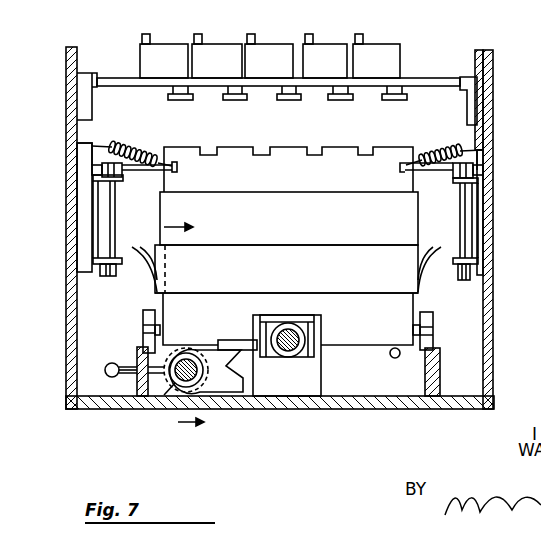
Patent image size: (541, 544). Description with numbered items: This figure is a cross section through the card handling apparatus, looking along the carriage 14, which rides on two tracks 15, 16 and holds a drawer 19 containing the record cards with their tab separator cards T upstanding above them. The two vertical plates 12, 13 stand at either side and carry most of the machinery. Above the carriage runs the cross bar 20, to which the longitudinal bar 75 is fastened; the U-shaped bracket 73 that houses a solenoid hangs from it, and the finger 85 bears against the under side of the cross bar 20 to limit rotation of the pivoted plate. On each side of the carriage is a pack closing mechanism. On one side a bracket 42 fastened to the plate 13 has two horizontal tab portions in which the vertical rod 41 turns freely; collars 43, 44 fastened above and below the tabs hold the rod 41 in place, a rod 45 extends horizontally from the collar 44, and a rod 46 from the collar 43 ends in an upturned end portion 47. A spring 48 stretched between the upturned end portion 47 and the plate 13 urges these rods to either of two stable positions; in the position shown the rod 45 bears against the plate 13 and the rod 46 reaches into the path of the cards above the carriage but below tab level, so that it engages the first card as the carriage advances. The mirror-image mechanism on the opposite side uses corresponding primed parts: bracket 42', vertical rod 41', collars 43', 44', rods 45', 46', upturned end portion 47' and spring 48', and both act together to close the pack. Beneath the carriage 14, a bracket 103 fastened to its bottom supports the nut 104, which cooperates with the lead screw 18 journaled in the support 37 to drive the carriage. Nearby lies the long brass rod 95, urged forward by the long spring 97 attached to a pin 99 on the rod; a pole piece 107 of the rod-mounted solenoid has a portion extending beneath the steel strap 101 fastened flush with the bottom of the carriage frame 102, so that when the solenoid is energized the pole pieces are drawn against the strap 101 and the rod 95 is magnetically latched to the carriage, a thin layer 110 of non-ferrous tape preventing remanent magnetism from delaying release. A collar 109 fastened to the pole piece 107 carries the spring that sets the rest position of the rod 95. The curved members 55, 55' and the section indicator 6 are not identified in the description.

The vertical plate 12 is at (66, 290).
The vertical plate 13 is at (494, 290).
The cross bar 20 is at (434, 78).
The U-shaped bracket 73 is at (268, 44).
The longitudinal bar 75 is at (245, 38).
The finger 85 is at (303, 100).
The tab separator cards T is at (208, 148).
The drawer 19 is at (327, 228).
The carriage 14 is at (327, 275).
The left curved guide 55' is at (138, 255).
The right curved guide 55 is at (437, 258).
The section line FIG. 6 is at (190, 327).
The bracket 42' is at (57, 207).
The collar 43' is at (57, 156).
The spring 48' is at (132, 144).
The upturned end portion 47' is at (176, 174).
The rod 46' is at (126, 181).
The vertical rod 41' is at (124, 216).
The collar 44' is at (120, 277).
The rod 45' is at (100, 286).
The bracket 42 is at (505, 212).
The collar 43 is at (505, 160).
The spring 48 is at (444, 146).
The upturned end portion 47 is at (406, 176).
The rod 46 is at (455, 184).
The vertical rod 41 is at (452, 218).
The collar 44 is at (454, 279).
The rod 45 is at (464, 290).
The carriage frame 102 is at (383, 315).
The bracket 103 is at (248, 314).
The support 37 is at (322, 387).
The lead screw 18 is at (315, 356).
The nut 104 is at (322, 330).
The steel strap 101 is at (236, 340).
The pole piece 107 is at (232, 373).
The thin layer of non-ferrous material 110 is at (207, 348).
The brass rod 95 is at (203, 385).
The collar 109 is at (168, 395).
The track 16 is at (441, 366).
The track 15 is at (134, 374).
The long spring 97 is at (110, 363).
The pin 99 is at (128, 367).